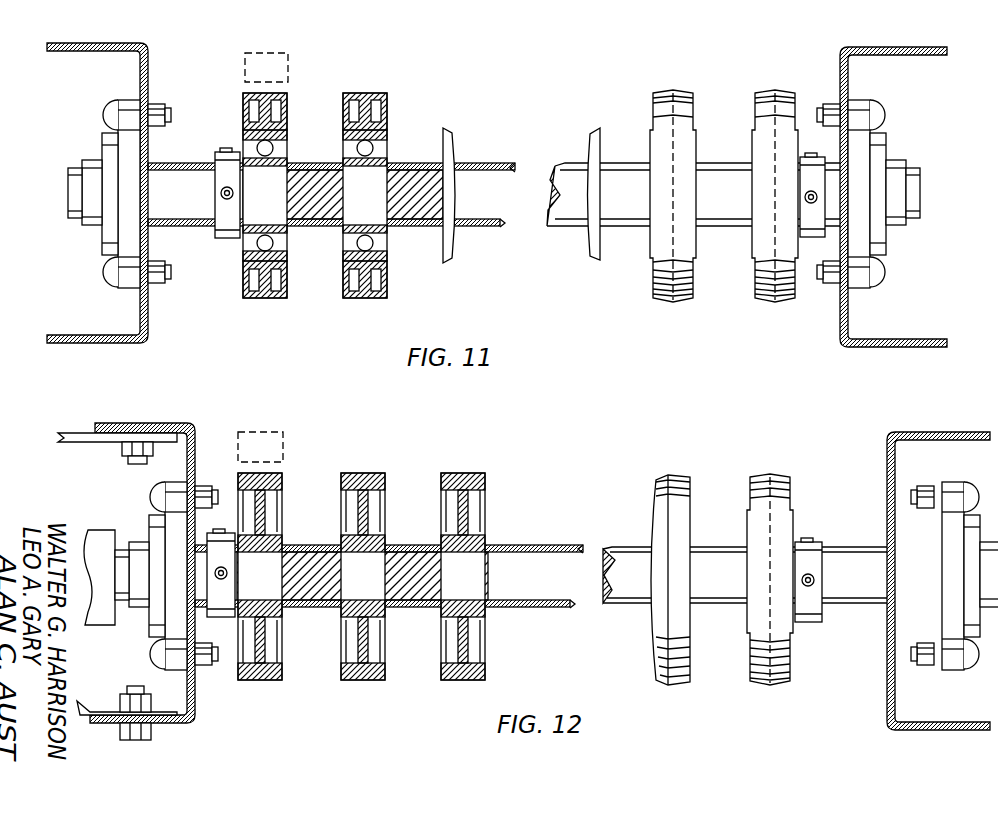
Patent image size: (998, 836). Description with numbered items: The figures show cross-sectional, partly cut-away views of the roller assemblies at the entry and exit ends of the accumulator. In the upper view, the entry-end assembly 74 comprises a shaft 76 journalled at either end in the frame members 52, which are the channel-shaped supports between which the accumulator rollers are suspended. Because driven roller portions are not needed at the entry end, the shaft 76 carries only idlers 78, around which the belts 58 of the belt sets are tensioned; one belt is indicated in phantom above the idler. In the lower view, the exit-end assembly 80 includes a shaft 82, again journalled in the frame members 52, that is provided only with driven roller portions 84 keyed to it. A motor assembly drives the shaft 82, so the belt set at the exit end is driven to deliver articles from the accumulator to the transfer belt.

In FIG. 11, the frame members 52 is at (90, 342).
In FIG. 12, the frame members 52 is at (180, 724).
In FIG. 11, the belts 58 is at (260, 63).
In FIG. 12, the belts 58 is at (262, 440).
In FIG. 11, the assembly 74 is at (505, 107).
In FIG. 11, the shaft 76 is at (478, 222).
In FIG. 11, the idlers 78 is at (357, 297).
In FIG. 12, the assembly 80 is at (532, 503).
In FIG. 12, the shaft 82 is at (548, 602).
In FIG. 12, the driven roller portions 84 is at (355, 680).